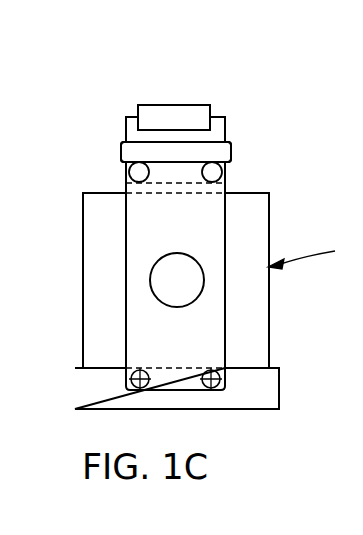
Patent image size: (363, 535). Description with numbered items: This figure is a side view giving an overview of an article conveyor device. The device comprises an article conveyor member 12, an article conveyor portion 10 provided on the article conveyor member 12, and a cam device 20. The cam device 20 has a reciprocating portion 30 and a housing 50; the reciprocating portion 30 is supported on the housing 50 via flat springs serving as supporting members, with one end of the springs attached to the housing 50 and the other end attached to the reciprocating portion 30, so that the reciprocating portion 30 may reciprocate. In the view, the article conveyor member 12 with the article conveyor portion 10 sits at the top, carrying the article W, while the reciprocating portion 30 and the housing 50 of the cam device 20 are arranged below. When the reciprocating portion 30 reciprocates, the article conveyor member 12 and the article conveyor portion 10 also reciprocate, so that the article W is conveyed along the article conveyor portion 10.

The article conveyor portion 10 is at (152, 128).
The article conveyor member 12 is at (233, 130).
The cam device 20 is at (199, 142).
The reciprocating portion 30 is at (222, 151).
The housing 50 is at (89, 391).
The article W is at (193, 113).